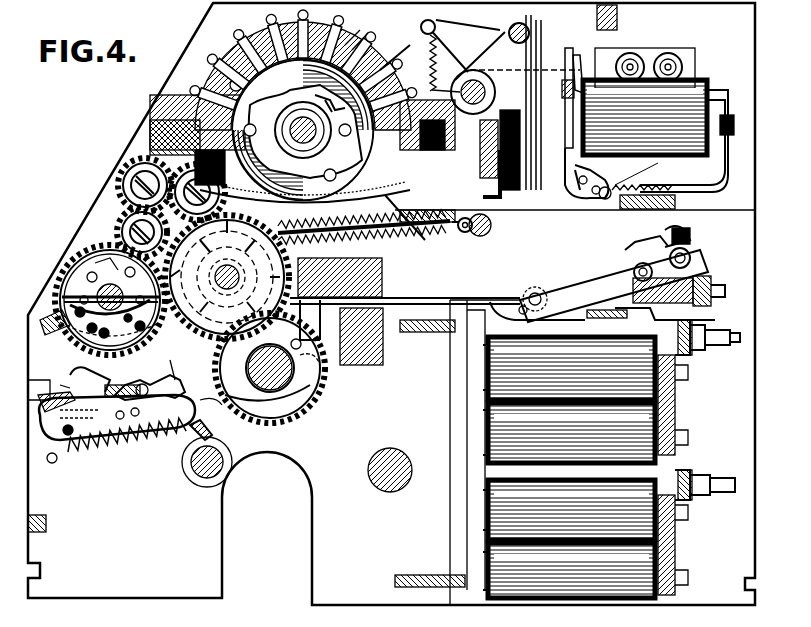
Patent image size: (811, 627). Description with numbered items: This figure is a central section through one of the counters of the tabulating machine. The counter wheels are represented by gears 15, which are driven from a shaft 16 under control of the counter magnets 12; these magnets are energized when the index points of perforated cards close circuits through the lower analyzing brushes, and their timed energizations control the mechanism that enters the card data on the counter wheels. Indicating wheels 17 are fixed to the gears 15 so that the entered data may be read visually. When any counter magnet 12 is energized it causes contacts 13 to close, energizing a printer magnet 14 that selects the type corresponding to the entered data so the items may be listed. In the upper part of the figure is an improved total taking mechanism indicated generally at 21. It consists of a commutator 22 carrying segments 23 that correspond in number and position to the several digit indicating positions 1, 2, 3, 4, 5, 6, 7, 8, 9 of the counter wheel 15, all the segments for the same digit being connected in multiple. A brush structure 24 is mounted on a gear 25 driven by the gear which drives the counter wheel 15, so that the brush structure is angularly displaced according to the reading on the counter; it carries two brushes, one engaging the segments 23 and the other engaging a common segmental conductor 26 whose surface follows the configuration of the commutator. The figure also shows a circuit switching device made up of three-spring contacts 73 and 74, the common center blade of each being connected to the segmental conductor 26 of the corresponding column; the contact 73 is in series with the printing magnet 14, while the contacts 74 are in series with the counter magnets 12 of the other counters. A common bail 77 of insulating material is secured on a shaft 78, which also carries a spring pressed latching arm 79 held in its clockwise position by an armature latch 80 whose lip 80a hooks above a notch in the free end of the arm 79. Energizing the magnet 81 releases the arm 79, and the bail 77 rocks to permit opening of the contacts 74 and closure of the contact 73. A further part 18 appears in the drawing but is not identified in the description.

The contact finger 1 is at (397, 98).
The contact finger 2 is at (383, 73).
The contact finger 3 is at (359, 50).
The contact finger 4 is at (332, 35).
The contact finger 5 is at (303, 29).
The contact finger 6 is at (275, 35).
The contact finger 7 is at (246, 47).
The contact finger 8 is at (223, 69).
The contact finger 9 is at (206, 96).
The counter magnet 12 is at (610, 355).
The contacts 13 is at (540, 295).
The printer magnet 14 is at (221, 290).
The gear 15 is at (72, 280).
The shaft 16 is at (214, 290).
The indicating wheel 17 is at (90, 262).
The lever 18 is at (130, 411).
The total taking mechanism 21 is at (158, 92).
The commutator 22 is at (340, 40).
The segments 23 is at (361, 27).
The brush structure 24 is at (399, 48).
The gear 25 is at (345, 240).
The common segmental conductor 26 is at (430, 240).
The three-spring contact 73 is at (510, 40).
The three-spring contacts 74 is at (525, 50).
The common bail 77 is at (513, 26).
The shaft 78 is at (442, 63).
The latching arm 79 is at (560, 70).
The armature latch 80 is at (578, 190).
The lip 80a is at (582, 56).
The magnet 81 is at (680, 100).